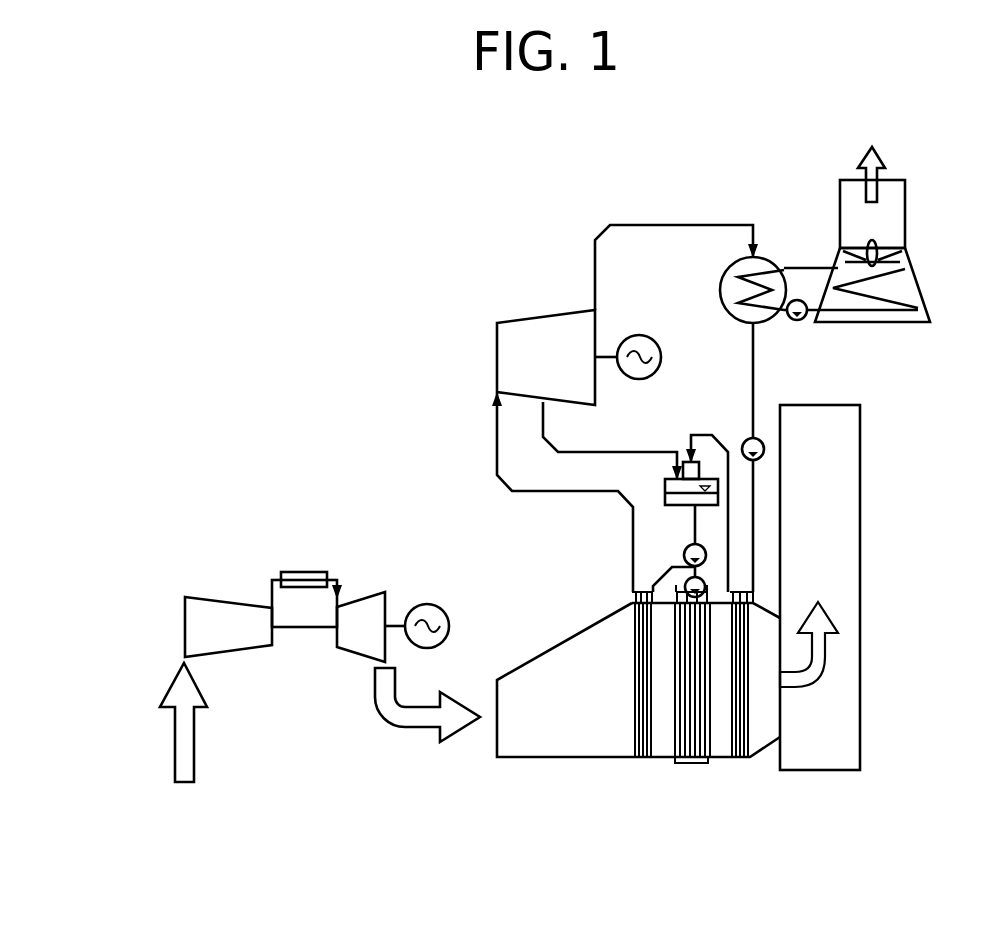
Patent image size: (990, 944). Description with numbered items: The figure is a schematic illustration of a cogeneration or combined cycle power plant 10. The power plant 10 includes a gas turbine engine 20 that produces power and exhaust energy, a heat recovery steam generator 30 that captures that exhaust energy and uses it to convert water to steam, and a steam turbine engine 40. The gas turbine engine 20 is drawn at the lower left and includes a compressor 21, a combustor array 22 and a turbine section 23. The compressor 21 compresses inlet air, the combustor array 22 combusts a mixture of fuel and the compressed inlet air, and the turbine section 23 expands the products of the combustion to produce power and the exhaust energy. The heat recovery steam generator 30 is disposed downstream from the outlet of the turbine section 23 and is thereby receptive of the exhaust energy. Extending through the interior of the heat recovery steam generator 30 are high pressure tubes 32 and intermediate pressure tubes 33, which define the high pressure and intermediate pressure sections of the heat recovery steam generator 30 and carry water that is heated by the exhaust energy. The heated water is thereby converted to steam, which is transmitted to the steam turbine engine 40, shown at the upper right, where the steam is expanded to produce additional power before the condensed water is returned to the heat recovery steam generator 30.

The combined cycle power plant 10 is at (377, 373).
The gas turbine engine 20 is at (302, 633).
The compressor 21 is at (230, 600).
The combustor array 22 is at (312, 572).
The turbine section 23 is at (363, 593).
The heat recovery steam generator 30 is at (575, 757).
The high pressure tubes 32 is at (645, 757).
The intermediate pressure tubes 33 is at (690, 765).
The steam turbine engine 40 is at (548, 285).